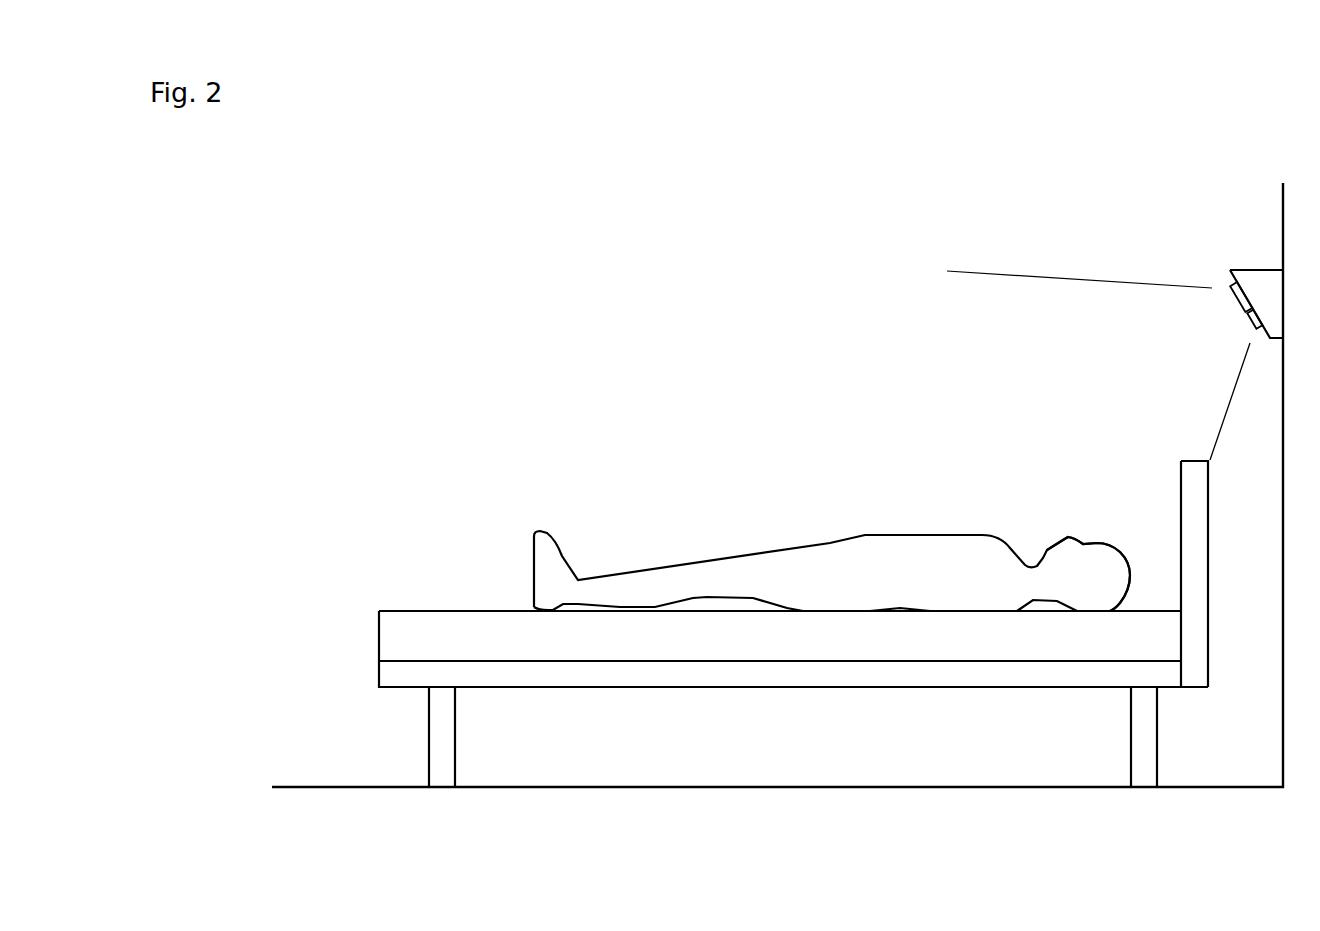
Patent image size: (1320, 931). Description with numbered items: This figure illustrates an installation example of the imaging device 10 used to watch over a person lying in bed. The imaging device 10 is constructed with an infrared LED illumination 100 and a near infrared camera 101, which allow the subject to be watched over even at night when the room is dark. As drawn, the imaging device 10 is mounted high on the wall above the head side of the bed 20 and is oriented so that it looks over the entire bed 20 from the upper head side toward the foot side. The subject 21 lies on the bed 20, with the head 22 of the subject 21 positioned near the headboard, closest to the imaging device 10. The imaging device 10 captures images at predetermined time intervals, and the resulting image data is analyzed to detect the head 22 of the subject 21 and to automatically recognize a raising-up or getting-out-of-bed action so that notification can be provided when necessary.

The imaging device 10 is at (1224, 289).
The infrared LED illumination 100 is at (1230, 291).
The near infrared camera 101 is at (1245, 320).
The bed 20 is at (429, 622).
The subject 21 is at (918, 547).
The head 22 is at (1097, 545).